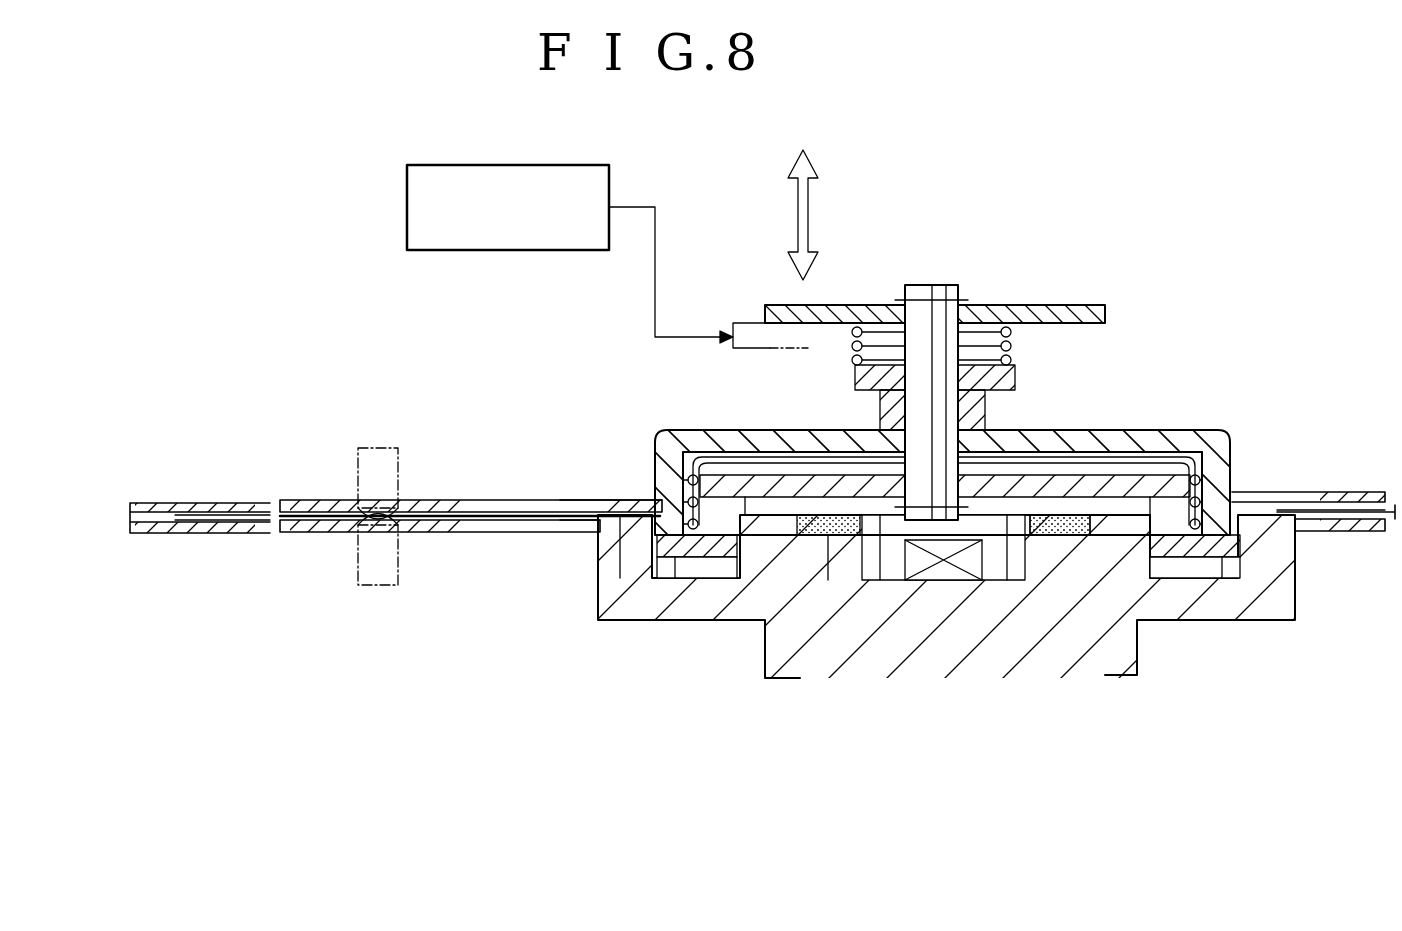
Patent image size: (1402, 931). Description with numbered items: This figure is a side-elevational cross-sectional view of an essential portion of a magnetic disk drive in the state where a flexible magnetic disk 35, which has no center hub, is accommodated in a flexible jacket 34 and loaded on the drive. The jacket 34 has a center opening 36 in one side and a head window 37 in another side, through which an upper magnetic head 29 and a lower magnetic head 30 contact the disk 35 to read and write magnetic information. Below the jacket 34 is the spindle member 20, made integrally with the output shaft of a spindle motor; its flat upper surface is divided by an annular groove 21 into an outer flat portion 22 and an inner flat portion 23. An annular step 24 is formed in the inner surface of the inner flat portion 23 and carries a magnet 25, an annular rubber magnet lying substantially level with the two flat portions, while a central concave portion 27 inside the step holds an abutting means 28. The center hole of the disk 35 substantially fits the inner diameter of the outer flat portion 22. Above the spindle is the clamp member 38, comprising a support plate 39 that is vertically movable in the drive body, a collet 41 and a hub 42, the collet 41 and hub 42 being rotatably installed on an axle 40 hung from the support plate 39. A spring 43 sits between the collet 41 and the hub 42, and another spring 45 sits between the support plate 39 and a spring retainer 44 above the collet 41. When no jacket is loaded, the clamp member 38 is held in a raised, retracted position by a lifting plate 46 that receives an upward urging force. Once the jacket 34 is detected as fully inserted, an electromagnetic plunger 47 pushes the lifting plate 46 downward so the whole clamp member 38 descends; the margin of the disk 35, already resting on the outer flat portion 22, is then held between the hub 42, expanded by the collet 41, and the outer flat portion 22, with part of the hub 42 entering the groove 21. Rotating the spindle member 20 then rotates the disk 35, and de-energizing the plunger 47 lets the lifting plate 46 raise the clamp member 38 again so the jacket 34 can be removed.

The spindle member 20 is at (752, 660).
The annular groove 21 is at (668, 545).
The outer flat portion 22 is at (614, 545).
The inner flat portion 23 is at (755, 535).
The annular step 24 is at (828, 540).
The magnet 25 is at (1058, 538).
The central concave portion 27 is at (1020, 538).
The abutting means 28 is at (940, 582).
The upper magnetic head 29 is at (378, 448).
The lower magnetic head 30 is at (375, 585).
The flexible jacket 34 is at (478, 500).
The flexible magnetic disk 35 is at (415, 533).
The center opening 36 is at (578, 500).
The head window 37 is at (240, 503).
The clamp member 38 is at (1162, 422).
The support plate 39 is at (1082, 305).
The axle 40 is at (940, 285).
The collet 41 is at (708, 445).
The hub 42 is at (800, 478).
The spring 43 is at (688, 470).
The spring retainer 44 is at (1018, 384).
The spring 45 is at (1015, 342).
The lifting plate 46 is at (744, 323).
The electromagnetic plunger 47 is at (420, 250).